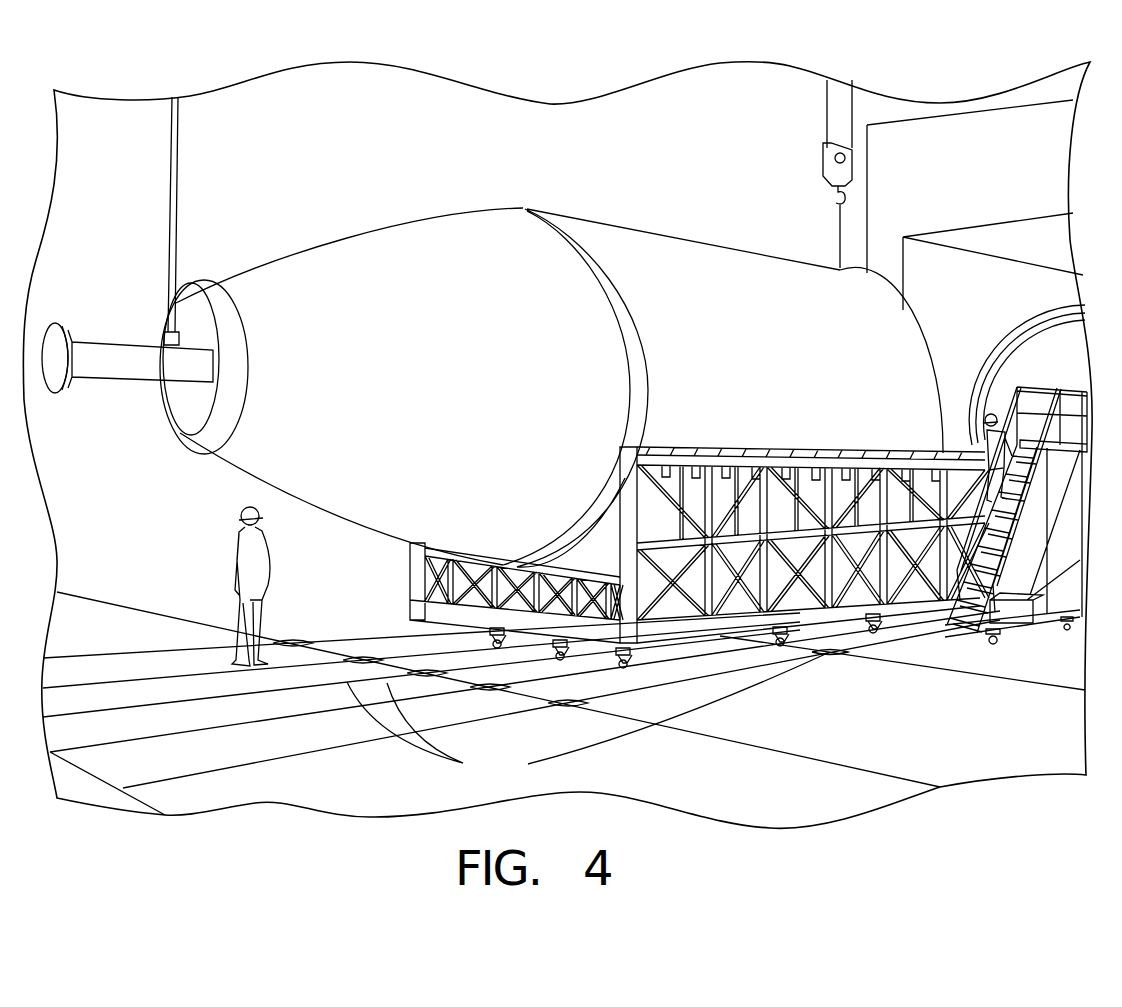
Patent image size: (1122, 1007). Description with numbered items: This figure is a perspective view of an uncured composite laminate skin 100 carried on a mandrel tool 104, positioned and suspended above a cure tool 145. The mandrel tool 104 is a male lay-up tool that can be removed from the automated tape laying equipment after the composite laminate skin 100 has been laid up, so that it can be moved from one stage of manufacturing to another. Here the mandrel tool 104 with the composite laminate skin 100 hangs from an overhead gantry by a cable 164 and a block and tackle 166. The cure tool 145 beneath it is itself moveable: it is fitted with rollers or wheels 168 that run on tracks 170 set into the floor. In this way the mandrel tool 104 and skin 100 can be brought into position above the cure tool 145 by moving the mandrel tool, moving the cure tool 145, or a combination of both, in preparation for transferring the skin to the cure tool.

The composite laminate skin 100 is at (663, 232).
The mandrel tool 104 is at (408, 268).
The cure tool 145 is at (825, 636).
The cable 164 is at (172, 237).
The block and tackle 166 is at (853, 164).
The rollers or wheels 168 is at (568, 656).
The tracks 170 is at (463, 763).